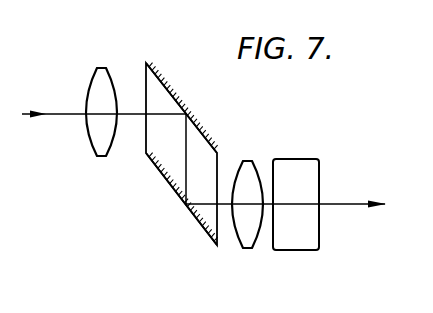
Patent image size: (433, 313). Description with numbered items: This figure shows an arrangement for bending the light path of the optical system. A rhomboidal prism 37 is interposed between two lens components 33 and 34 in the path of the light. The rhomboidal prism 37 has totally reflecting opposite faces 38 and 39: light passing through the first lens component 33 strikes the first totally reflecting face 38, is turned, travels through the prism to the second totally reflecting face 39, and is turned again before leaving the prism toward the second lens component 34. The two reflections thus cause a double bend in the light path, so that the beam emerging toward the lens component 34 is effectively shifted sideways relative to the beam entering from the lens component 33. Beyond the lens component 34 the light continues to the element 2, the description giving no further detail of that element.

The photodetector / receiving element 2 is at (289, 158).
The lens component 33 is at (102, 67).
The lens component 34 is at (247, 250).
The rhomboidal prism 37 is at (203, 137).
The totally reflecting face 38 is at (160, 87).
The totally reflecting face 39 is at (167, 181).